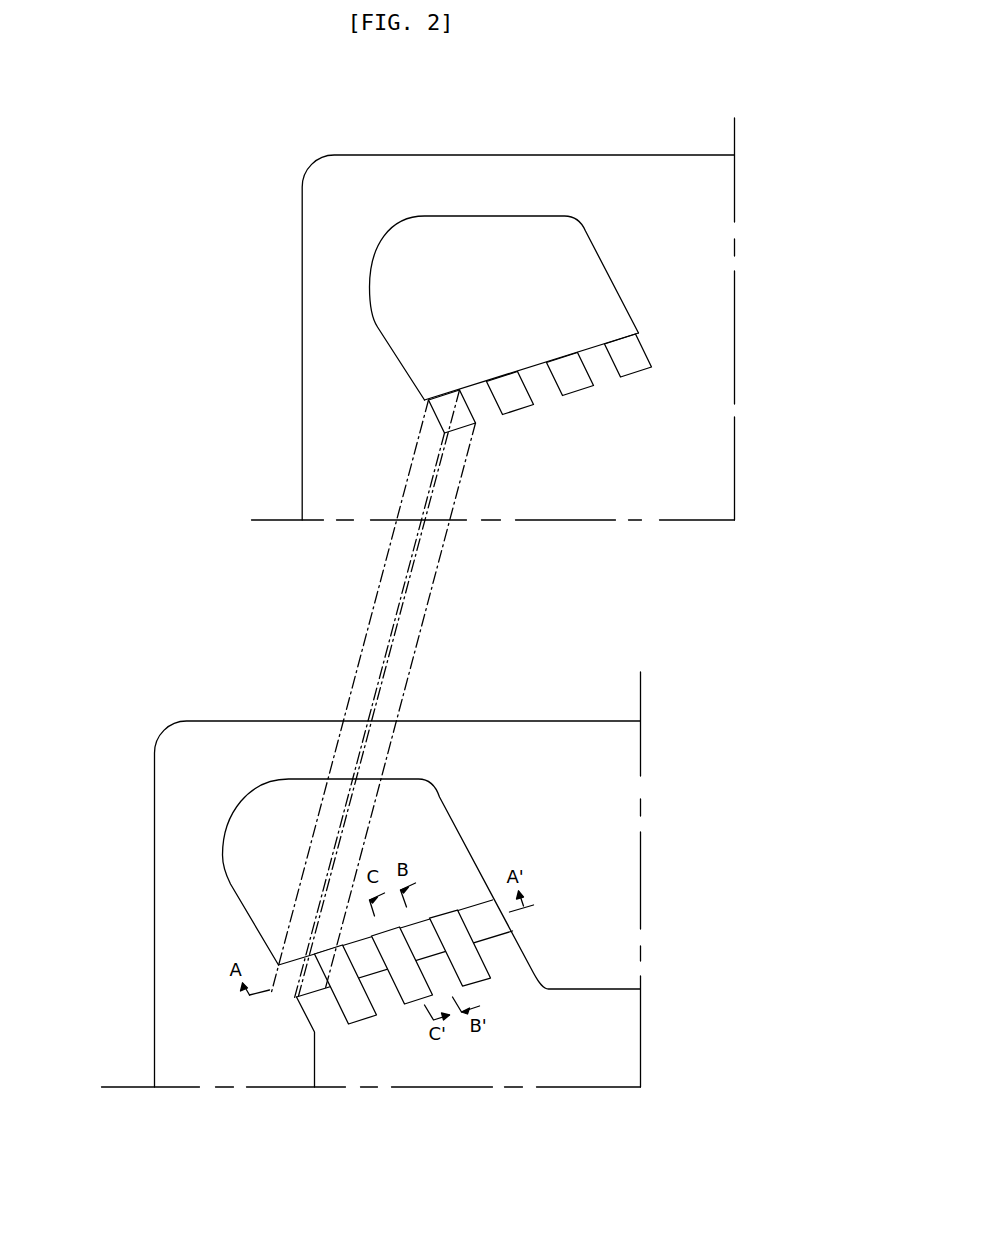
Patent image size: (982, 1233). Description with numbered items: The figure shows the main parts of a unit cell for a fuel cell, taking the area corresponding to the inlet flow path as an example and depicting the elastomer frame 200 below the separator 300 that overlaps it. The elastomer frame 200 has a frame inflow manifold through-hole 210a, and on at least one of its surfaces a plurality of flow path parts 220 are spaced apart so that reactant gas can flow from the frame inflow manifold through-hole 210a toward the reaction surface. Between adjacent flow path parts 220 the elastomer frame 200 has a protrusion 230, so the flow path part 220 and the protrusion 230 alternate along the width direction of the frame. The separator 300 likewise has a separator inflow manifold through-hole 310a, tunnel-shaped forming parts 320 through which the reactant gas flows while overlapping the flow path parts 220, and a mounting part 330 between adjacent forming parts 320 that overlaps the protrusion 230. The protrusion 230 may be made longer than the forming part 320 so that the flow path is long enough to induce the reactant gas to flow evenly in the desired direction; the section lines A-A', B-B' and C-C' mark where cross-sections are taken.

The elastomer frame 200 is at (215, 721).
The frame inflow manifold through-hole 210a is at (250, 832).
The flow path part 220 is at (297, 993).
The protrusion 230 is at (316, 955).
The separator 300 is at (486, 155).
The separator inflow manifold through-hole 310a is at (397, 307).
The forming part 320 is at (633, 360).
The mounting part 330 is at (633, 335).